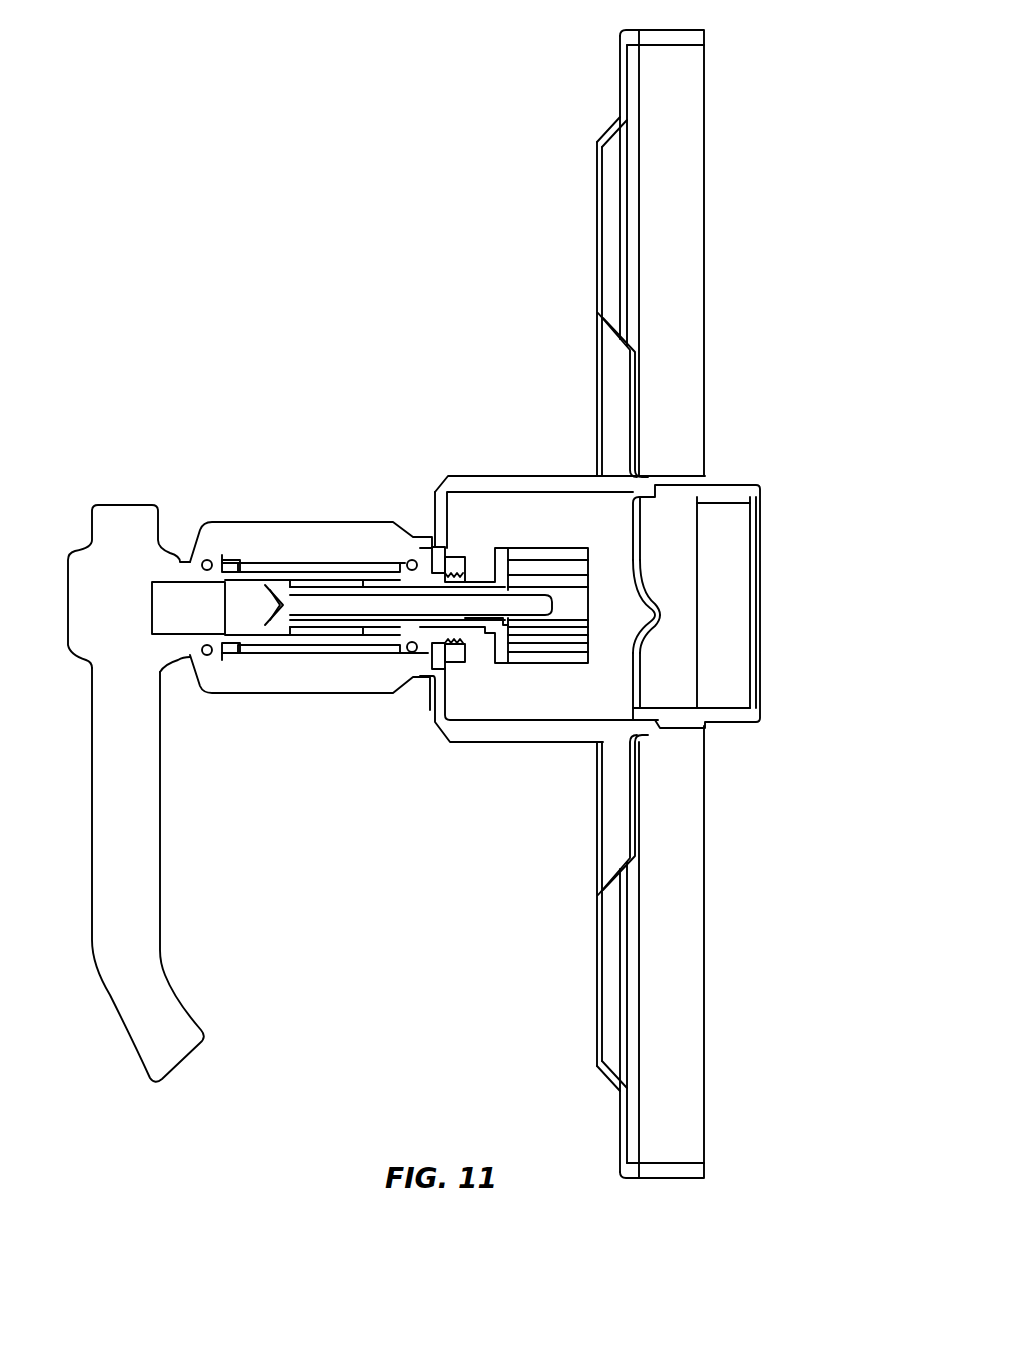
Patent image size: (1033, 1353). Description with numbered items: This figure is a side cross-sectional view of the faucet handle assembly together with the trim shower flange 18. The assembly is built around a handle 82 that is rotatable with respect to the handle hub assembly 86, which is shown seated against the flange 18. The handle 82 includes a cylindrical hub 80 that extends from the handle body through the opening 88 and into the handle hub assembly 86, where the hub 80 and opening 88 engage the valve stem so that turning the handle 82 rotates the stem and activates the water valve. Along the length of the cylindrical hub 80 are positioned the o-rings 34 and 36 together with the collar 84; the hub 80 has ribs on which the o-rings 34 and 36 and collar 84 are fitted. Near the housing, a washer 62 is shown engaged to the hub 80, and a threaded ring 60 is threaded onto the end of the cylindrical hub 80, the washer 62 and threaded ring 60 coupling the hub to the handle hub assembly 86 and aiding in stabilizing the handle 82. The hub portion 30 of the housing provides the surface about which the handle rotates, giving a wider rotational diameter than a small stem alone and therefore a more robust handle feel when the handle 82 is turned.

The trim shower flange 18 is at (688, 138).
The hub portion 30 is at (470, 590).
The o-ring 34 is at (205, 560).
The o-ring 36 is at (412, 558).
The threaded ring 60 is at (455, 558).
The washer 62 is at (432, 546).
The cylindrical hub 80 is at (255, 566).
The handle 82 is at (78, 678).
The collar 84 is at (227, 560).
The handle hub assembly 86 is at (352, 488).
The opening 88 is at (228, 658).